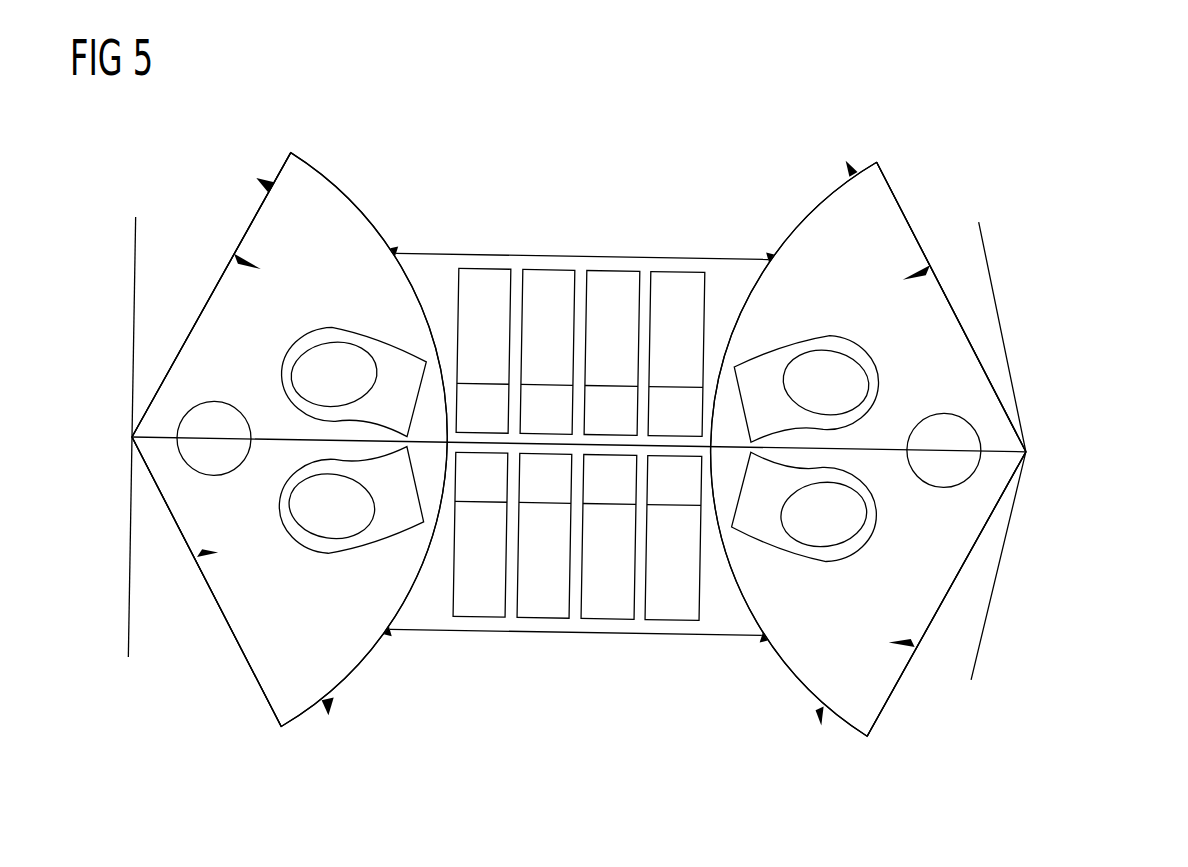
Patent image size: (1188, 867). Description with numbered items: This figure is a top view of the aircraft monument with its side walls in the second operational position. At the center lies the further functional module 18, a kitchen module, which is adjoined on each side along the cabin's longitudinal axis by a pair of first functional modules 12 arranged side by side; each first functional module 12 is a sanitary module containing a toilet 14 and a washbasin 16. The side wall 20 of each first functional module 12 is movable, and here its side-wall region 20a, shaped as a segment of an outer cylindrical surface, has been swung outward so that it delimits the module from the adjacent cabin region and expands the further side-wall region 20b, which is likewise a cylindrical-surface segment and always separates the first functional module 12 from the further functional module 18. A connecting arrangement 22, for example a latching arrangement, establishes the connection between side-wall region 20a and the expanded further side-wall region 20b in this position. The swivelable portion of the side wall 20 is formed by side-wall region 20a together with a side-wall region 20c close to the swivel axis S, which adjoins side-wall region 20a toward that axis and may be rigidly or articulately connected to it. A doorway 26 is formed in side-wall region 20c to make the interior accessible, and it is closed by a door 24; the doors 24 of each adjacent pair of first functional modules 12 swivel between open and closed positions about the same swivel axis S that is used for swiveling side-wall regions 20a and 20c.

The first functional module 12 is at (240, 258).
The toilet 14 is at (340, 352).
The washbasin 16 is at (210, 410).
The further functional module 18 is at (578, 258).
The side wall 20 is at (258, 178).
The side-wall region 20a is at (328, 180).
The further side-wall region 20b is at (417, 283).
The side-wall region close to the swivel axis 20c is at (165, 375).
The connecting arrangement 22 is at (396, 246).
The door 24 is at (130, 240).
The doorway 26 is at (214, 288).
The swivel axis S is at (128, 437).